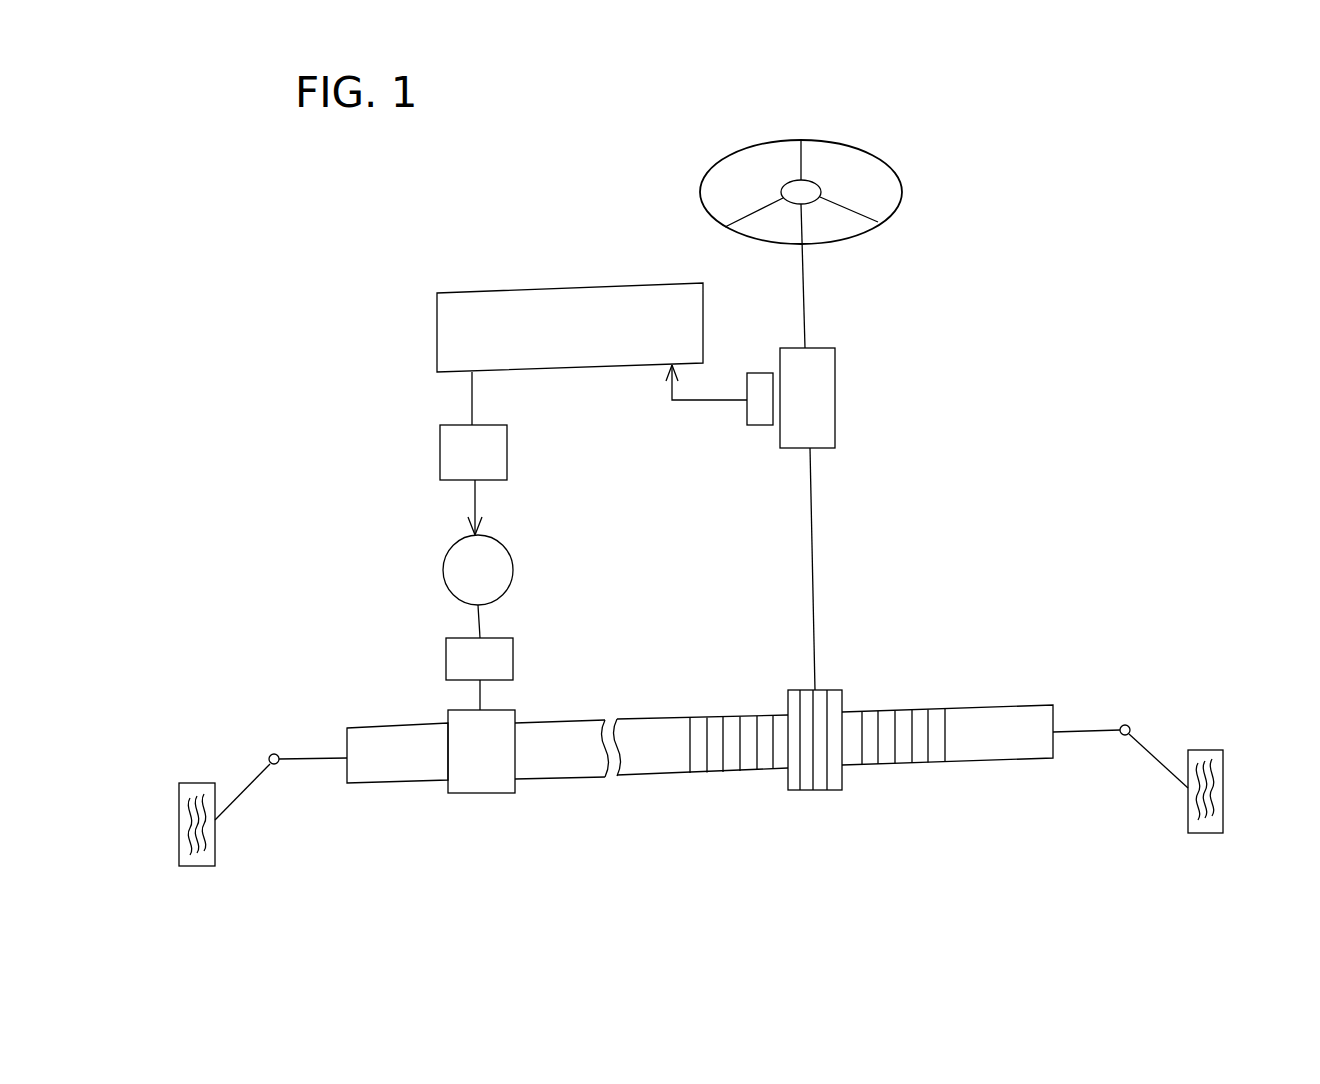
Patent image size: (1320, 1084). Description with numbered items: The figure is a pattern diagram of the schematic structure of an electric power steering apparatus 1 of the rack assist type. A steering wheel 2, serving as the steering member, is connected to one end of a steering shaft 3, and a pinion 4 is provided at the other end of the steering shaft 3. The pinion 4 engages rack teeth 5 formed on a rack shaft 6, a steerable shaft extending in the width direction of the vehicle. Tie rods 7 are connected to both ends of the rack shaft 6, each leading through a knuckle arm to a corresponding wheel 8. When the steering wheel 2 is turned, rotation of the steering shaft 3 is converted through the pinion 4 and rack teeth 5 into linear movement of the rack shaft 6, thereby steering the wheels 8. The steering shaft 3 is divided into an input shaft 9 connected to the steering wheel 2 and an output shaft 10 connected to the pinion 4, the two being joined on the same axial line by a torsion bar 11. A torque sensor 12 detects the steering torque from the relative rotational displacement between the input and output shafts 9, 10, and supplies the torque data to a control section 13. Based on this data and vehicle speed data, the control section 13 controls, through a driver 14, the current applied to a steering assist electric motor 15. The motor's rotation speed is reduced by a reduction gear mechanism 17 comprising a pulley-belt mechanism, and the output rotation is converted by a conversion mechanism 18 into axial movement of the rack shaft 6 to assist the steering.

The electric power steering apparatus 1 is at (1008, 365).
The steering wheel 2 is at (832, 140).
The steering shaft 3 is at (805, 318).
The pinion 4 is at (830, 790).
The rack teeth 5 is at (750, 760).
The rack shaft 6 is at (985, 752).
The tie rod 7 is at (1150, 758).
The wheel 8 is at (200, 866).
The input shaft 9 is at (805, 296).
The output shaft 10 is at (813, 548).
The torsion bar 11 is at (825, 405).
The torque sensor 12 is at (760, 373).
The control section 13 is at (483, 293).
The driver 14 is at (440, 450).
The steering assist electric motor 15 is at (443, 568).
The reduction gear mechanism 17 is at (446, 658).
The conversion mechanism 18 is at (483, 780).